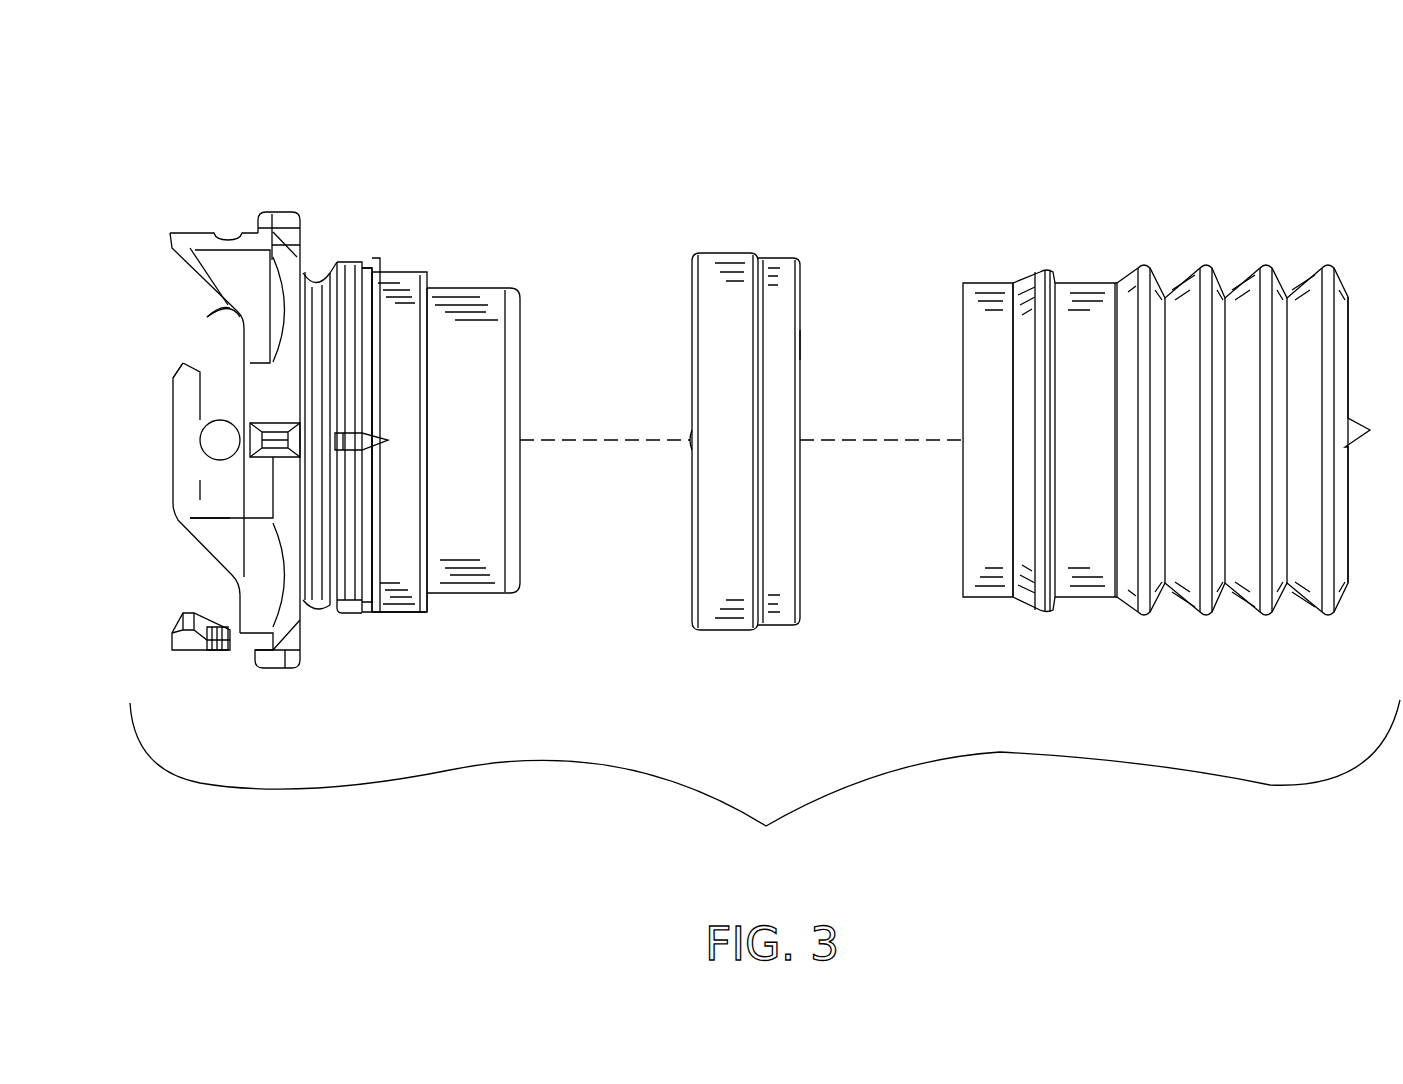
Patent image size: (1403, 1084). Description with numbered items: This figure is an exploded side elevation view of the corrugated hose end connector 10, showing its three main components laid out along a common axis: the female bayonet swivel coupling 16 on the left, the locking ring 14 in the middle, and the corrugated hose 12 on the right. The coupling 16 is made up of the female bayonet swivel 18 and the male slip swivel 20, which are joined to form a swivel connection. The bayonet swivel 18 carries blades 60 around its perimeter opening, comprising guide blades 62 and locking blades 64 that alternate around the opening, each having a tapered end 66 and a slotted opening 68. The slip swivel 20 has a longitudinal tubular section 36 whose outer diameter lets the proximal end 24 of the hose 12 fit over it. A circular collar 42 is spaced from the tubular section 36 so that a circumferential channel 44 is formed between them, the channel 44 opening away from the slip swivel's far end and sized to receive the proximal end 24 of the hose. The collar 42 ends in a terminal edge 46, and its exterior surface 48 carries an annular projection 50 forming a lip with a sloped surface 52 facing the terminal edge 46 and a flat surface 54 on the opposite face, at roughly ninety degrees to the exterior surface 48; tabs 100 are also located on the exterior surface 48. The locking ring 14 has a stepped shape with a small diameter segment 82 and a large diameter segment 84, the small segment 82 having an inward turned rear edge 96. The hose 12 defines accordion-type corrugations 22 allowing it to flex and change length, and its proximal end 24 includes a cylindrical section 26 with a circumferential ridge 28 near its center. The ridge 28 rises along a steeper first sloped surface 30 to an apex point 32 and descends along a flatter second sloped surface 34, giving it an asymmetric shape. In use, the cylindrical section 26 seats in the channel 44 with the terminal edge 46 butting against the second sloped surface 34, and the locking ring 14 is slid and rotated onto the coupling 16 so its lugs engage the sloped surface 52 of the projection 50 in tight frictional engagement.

The corrugated hose end connector 10 is at (765, 785).
The corrugated hose 12 is at (1225, 187).
The locking ring 14 is at (742, 133).
The female bayonet swivel coupling 16 is at (330, 103).
The female bayonet swivel 18 is at (216, 192).
The male slip swivel 20 is at (405, 250).
The accordion-type corrugations 22 is at (1327, 266).
The proximal end 24 is at (995, 600).
The cylindrical section 26 is at (1090, 545).
The circumferential ridge 28 is at (1044, 268).
The first sloped surface 30 is at (1052, 270).
The apex point 32 is at (1038, 612).
The second sloped surface 34 is at (1022, 282).
The longitudinal tubular section 36 is at (477, 450).
The circular collar 42 is at (420, 290).
The circumferential channel 44 is at (433, 602).
The terminal edge 46 is at (390, 605).
The exterior surface 48 is at (398, 367).
The annular projection 50 is at (363, 620).
The sloped surface 52 is at (370, 588).
The flat surface 54 is at (338, 612).
The blades 60 is at (212, 492).
The guide blades 62 is at (203, 490).
The locking blades 64 is at (214, 648).
The tapered end 66 is at (183, 366).
The slotted opening 68 is at (205, 372).
The small diameter segment 82 is at (780, 265).
The large diameter segment 84 is at (708, 262).
The inward turned rear edge 96 is at (804, 347).
The tabs 100 is at (379, 258).